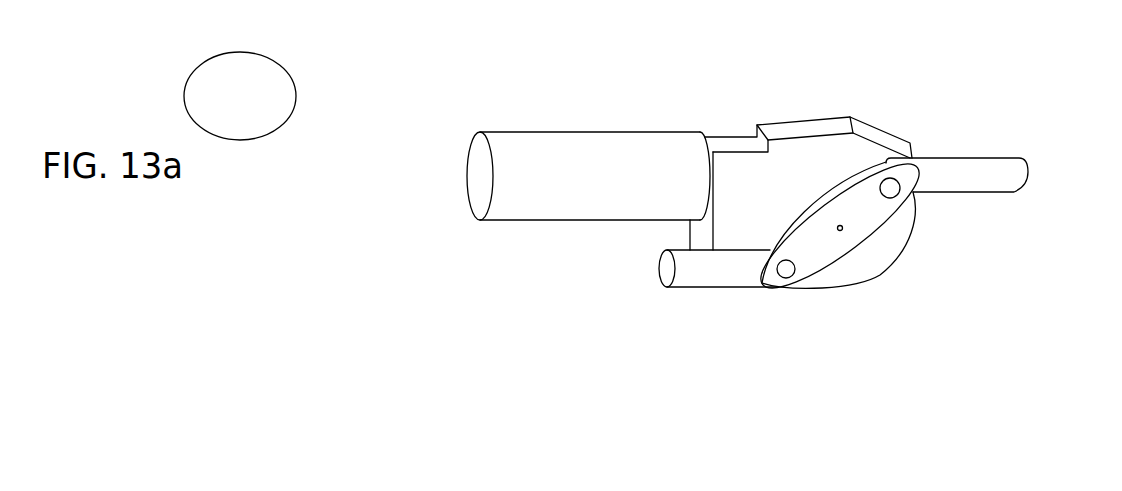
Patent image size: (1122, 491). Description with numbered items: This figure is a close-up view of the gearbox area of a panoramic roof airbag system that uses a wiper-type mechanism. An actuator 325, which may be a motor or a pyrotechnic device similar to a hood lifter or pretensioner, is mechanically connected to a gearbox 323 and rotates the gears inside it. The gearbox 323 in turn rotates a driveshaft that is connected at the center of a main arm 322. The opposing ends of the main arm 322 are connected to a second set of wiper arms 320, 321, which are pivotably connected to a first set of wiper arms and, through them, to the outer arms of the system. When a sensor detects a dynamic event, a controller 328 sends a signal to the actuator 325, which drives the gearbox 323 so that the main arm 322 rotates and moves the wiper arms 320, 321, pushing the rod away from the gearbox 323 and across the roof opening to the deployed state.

The second wiper arm 320 is at (705, 277).
The second wiper arm 321 is at (977, 183).
The main arm 322 is at (825, 250).
The gearbox 323 is at (802, 153).
The actuator 325 is at (548, 153).
The controller 328 is at (482, 157).